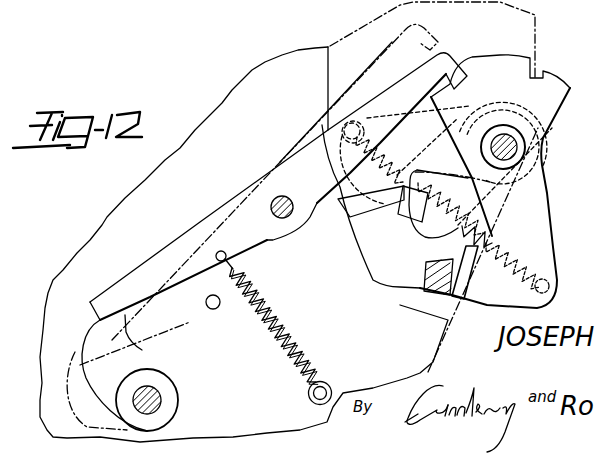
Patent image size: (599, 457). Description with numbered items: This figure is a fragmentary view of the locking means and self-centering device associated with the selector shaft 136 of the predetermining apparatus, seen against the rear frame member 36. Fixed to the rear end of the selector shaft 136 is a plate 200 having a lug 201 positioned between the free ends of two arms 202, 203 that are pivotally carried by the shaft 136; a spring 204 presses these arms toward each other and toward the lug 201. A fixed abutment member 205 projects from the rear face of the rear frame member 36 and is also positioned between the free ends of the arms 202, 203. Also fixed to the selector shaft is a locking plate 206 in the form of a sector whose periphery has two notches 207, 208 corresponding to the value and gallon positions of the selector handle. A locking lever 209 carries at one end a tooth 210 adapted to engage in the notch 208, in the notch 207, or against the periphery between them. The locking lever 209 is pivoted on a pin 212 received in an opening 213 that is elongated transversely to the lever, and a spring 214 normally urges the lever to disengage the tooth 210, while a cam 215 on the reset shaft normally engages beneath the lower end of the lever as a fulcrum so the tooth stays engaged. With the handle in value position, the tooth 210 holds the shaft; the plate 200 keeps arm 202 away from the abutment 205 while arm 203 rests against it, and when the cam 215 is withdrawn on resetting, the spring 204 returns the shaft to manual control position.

The rear frame member 36 is at (224, 103).
The selector shaft 136 is at (162, 396).
The plate 200 is at (470, 202).
The lug 201 is at (407, 240).
The arm 202 is at (374, 215).
The arm 203 is at (497, 298).
The spring 204 is at (449, 236).
The fixed abutment member 205 is at (427, 288).
The locking plate 206 is at (561, 88).
The notch 207 is at (540, 74).
The notch 208 is at (465, 83).
The locking lever 209 is at (218, 212).
The tooth 210 is at (446, 56).
The pin 212 is at (278, 196).
The opening 213 is at (285, 226).
The spring 214 is at (284, 328).
The cam 215 is at (150, 362).